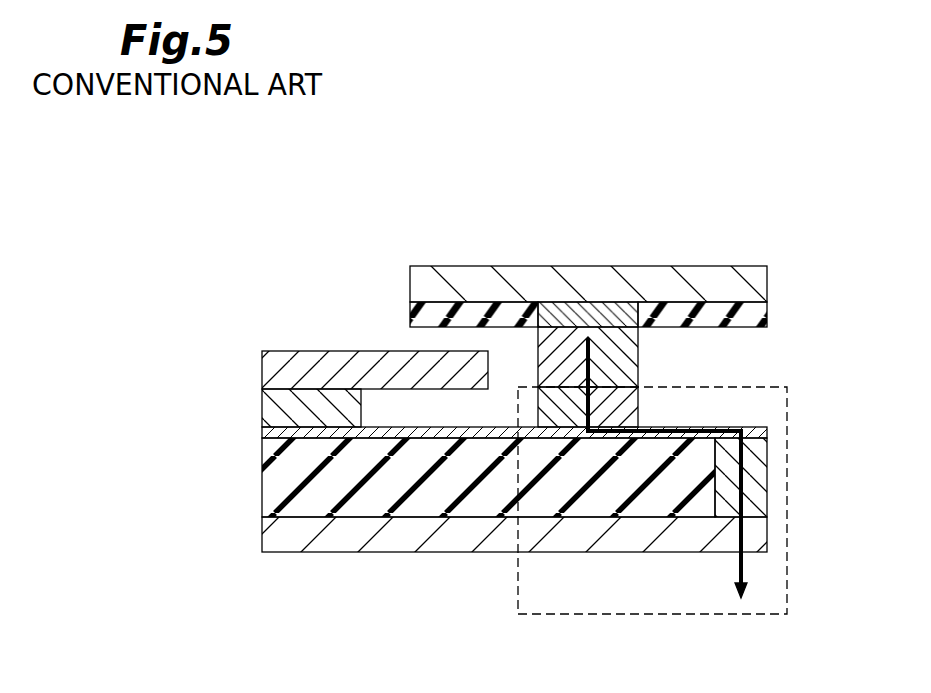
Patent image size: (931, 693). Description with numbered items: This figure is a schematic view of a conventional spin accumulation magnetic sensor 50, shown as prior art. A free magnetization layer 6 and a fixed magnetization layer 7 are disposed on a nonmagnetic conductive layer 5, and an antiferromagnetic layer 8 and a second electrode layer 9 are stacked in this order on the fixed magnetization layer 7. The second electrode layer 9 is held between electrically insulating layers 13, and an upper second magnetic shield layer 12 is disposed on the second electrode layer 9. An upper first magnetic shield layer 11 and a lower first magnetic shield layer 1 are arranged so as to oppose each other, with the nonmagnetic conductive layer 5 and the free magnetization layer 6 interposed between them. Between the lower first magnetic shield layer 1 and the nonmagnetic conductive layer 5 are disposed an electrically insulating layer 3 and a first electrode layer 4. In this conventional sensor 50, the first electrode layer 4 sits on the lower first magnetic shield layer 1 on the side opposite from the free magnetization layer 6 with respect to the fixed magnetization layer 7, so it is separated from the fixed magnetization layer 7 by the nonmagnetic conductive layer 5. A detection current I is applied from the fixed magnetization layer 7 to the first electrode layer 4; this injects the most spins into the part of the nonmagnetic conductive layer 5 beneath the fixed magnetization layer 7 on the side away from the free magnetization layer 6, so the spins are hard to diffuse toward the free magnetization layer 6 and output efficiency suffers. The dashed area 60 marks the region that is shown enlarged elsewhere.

The lower first magnetic shield layer 1 is at (270, 536).
The electrically insulating layer 3 is at (270, 481).
The first electrode layer 4 is at (767, 473).
The nonmagnetic conductive layer 5 is at (755, 430).
The free magnetization layer 6 is at (270, 409).
The fixed magnetization layer 7 is at (638, 404).
The antiferromagnetic layer 8 is at (638, 356).
The second electrode layer 9 is at (578, 308).
The upper first magnetic shield layer 11 is at (311, 359).
The upper second magnetic shield layer 12 is at (410, 283).
The electrically insulating layers 13 is at (412, 312).
The conventional spin accumulation magnetic sensor 50 is at (302, 229).
The area 60 is at (518, 583).
The detection current I is at (738, 571).